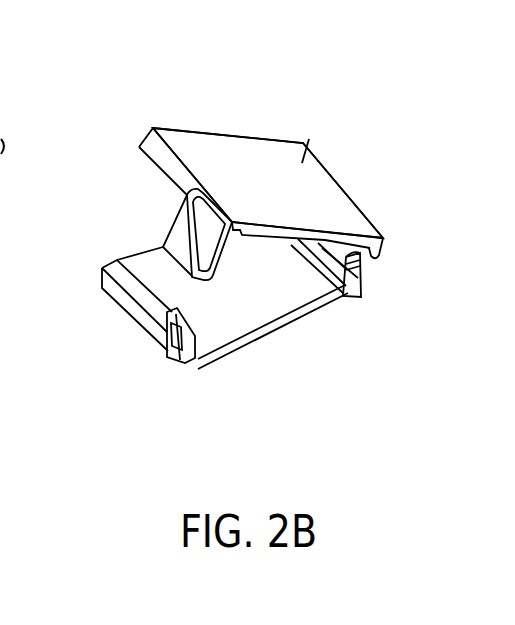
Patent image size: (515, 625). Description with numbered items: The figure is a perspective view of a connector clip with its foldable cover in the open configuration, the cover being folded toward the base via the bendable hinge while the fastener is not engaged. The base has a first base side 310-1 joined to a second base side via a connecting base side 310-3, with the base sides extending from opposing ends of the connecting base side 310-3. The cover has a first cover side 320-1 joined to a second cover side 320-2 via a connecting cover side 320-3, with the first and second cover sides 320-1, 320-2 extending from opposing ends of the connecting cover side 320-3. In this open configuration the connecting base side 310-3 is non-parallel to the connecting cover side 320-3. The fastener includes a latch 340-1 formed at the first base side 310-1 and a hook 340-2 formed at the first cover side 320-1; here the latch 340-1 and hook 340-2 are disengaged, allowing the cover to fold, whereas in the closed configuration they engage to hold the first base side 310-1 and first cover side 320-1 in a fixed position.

The first cover side 320-1 is at (153, 150).
The second cover side 320-2 is at (380, 257).
The connecting cover side 320-3 is at (309, 143).
The first base side 310-1 is at (103, 272).
The connecting base side 310-3 is at (252, 320).
The latch 340-1 is at (163, 352).
The hook 340-2 is at (178, 232).